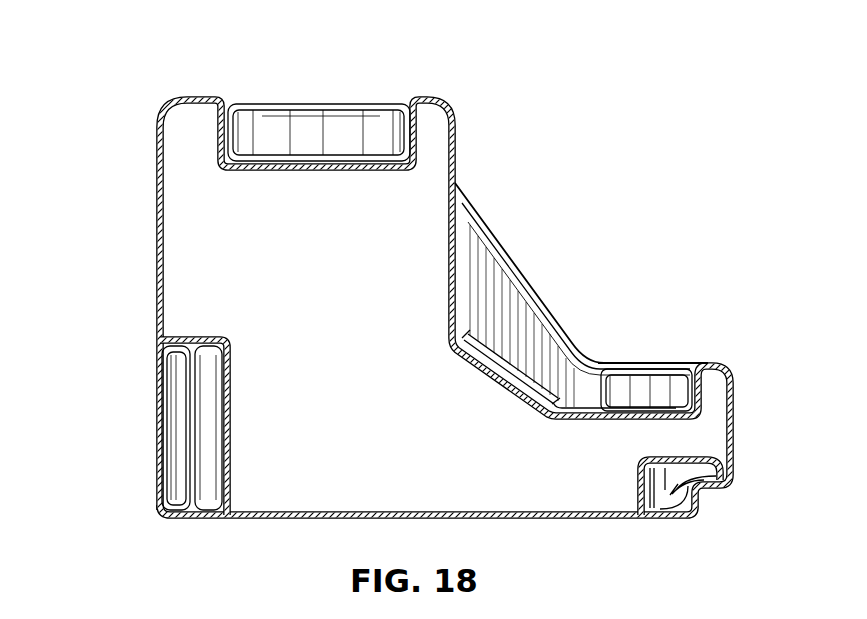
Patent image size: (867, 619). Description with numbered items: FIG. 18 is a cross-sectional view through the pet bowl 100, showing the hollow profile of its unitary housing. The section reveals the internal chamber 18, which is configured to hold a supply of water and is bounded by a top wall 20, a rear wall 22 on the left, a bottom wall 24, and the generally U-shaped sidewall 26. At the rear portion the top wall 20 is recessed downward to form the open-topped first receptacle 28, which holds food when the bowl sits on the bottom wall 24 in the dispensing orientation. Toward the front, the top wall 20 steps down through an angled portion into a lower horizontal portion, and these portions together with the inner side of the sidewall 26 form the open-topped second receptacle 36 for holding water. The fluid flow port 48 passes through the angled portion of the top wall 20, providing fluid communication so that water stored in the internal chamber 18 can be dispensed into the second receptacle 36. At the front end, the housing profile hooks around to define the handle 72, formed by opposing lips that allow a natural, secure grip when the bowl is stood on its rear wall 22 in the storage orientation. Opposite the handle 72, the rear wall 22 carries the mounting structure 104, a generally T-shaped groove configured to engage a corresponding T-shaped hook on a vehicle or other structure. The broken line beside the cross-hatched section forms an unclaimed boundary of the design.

The pet bowl 100 is at (90, 63).
The internal chamber 18 is at (375, 341).
The top wall 20 is at (385, 98).
The rear wall 22 is at (157, 229).
The bottom wall 24 is at (538, 520).
The sidewall 26 is at (492, 252).
The first receptacle 28 is at (312, 118).
The second receptacle 36 is at (535, 341).
The fluid flow port 48 is at (502, 383).
The handle 72 is at (744, 434).
The mounting structure 104 is at (203, 437).